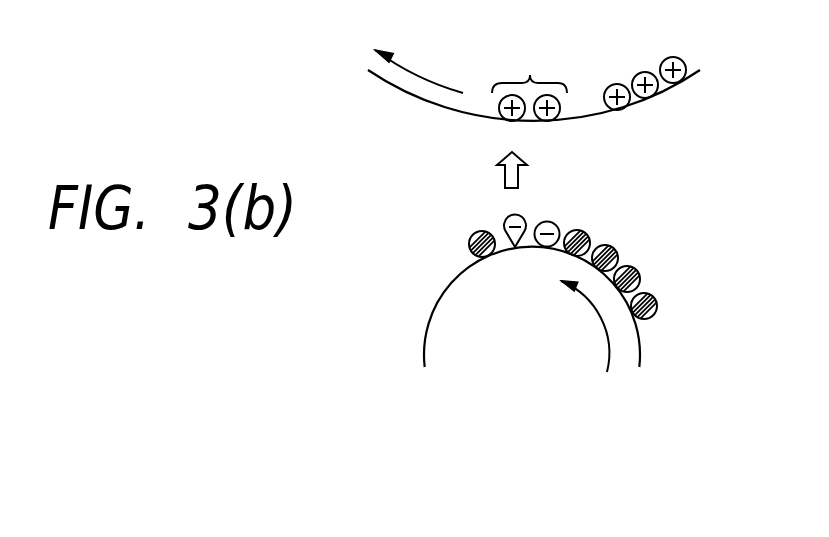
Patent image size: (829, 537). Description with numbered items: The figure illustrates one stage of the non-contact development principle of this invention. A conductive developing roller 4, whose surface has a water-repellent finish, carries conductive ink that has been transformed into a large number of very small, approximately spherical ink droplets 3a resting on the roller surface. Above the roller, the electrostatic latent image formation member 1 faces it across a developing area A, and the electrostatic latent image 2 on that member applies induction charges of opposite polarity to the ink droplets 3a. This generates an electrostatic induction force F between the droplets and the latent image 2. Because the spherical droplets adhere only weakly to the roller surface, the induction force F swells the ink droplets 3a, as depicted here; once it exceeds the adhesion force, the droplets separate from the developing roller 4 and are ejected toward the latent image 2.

The electrostatic latent image formation member 1 is at (390, 87).
The electrostatic latent image 2 is at (642, 72).
The developing area A is at (529, 78).
The electrostatic induction force F is at (522, 178).
The ink droplets 3a is at (640, 267).
The conductive developing roller 4 is at (640, 347).